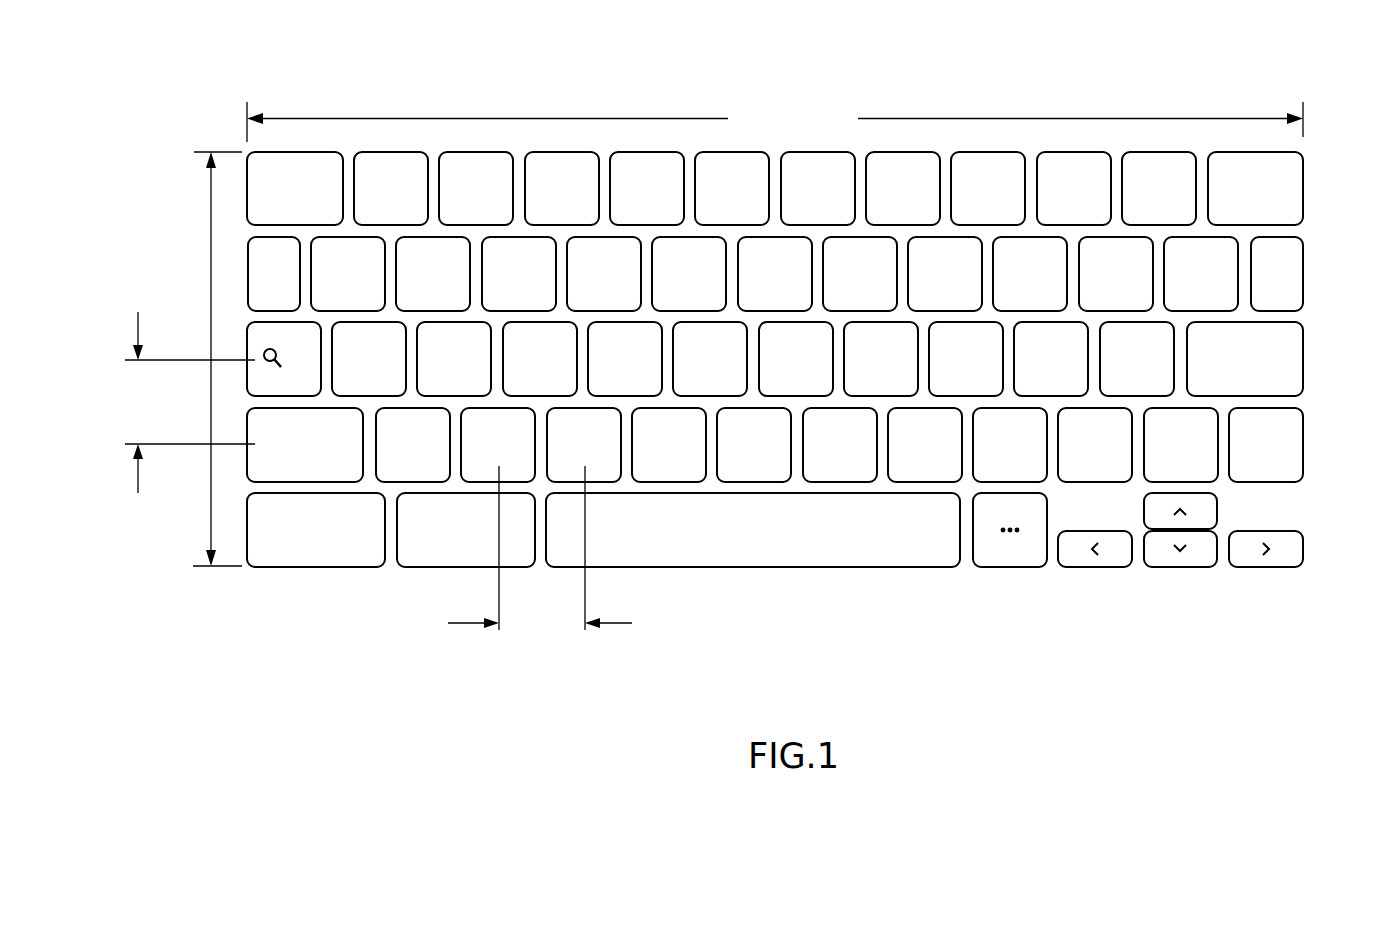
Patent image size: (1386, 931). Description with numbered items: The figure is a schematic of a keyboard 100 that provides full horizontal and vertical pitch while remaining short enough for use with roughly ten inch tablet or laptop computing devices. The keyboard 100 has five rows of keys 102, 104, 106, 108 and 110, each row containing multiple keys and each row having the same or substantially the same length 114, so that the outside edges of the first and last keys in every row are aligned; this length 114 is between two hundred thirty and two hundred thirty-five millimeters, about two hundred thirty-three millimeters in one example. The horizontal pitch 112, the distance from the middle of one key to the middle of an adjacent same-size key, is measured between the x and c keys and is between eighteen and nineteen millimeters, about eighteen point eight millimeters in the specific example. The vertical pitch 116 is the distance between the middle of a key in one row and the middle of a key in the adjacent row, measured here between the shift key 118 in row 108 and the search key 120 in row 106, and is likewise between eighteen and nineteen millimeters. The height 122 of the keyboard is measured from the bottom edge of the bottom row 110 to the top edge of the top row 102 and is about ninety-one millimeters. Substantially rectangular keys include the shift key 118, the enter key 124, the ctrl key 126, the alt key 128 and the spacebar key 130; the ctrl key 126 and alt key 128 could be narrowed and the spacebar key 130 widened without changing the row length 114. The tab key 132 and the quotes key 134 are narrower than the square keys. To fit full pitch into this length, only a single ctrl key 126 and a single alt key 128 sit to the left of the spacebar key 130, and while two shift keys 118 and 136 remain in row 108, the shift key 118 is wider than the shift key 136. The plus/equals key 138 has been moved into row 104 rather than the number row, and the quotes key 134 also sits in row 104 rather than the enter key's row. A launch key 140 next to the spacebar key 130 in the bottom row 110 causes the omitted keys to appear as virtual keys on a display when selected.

The keyboard 100 is at (540, 85).
The top row of keys 102 is at (1315, 152).
The second row of keys 104 is at (1315, 237).
The third row of keys 106 is at (1315, 322).
The fourth row of keys 108 is at (1315, 408).
The bottom row of keys 110 is at (1315, 493).
The horizontal pitch 112 is at (496, 677).
The length 114 is at (788, 102).
The vertical pitch 116 is at (128, 333).
The shift key 118 is at (262, 463).
The search key 120 is at (262, 337).
The height 122 is at (180, 305).
The enter key 124 is at (1232, 360).
The ctrl key 126 is at (300, 550).
The alt key 128 is at (423, 552).
The spacebar key 130 is at (830, 557).
The tab key 132 is at (257, 253).
The quotes key 134 is at (1282, 263).
The shift key 136 is at (1283, 472).
The plus/equals key 138 is at (1200, 247).
The launch key 140 is at (985, 547).